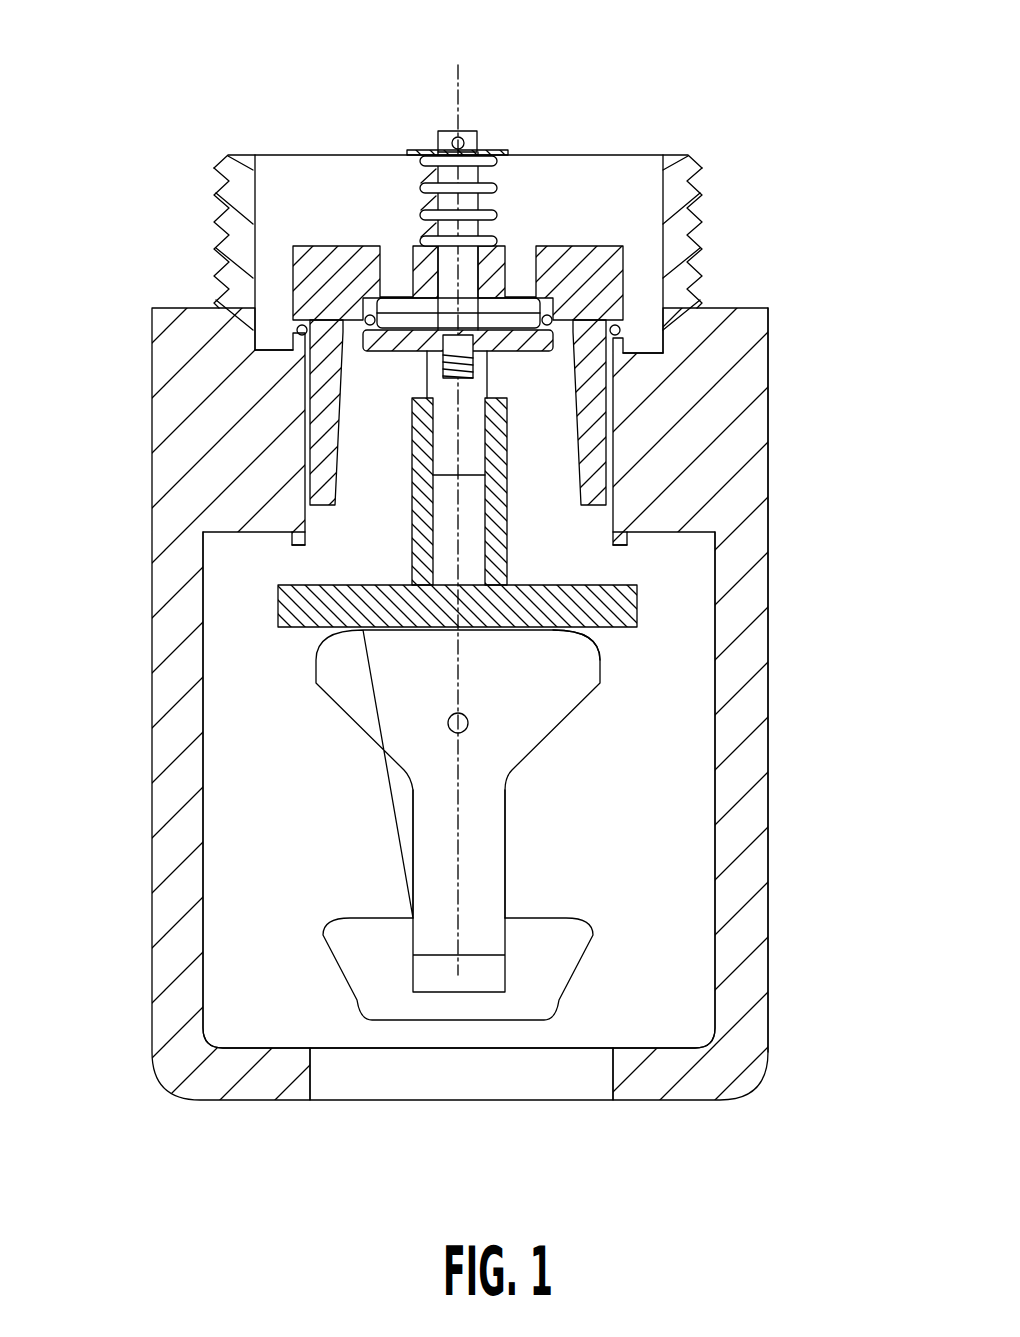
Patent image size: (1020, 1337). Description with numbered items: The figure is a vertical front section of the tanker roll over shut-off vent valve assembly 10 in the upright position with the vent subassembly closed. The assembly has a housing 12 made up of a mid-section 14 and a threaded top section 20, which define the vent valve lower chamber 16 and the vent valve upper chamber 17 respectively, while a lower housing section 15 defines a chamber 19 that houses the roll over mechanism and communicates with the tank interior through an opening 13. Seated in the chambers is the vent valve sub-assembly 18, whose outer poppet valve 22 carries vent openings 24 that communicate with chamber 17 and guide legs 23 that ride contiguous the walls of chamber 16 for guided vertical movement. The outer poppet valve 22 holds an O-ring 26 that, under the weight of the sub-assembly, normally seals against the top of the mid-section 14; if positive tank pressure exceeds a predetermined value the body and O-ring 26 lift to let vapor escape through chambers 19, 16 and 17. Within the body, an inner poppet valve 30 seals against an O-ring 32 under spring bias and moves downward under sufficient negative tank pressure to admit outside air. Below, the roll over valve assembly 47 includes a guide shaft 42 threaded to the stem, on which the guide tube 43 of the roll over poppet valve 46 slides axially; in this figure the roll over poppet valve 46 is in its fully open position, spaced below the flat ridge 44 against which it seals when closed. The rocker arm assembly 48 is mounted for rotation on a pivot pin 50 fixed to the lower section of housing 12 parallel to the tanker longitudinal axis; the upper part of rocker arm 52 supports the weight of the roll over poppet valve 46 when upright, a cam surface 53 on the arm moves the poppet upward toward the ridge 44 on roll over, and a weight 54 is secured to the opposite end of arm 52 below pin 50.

The tanker roll over shut-off vent valve assembly 10 is at (250, 65).
The housing 12 is at (772, 700).
The opening 13 is at (570, 1080).
The mid-section 14 is at (712, 424).
The lower housing section 15 is at (740, 870).
The vent valve lower passageway or chamber 16 is at (527, 448).
The vent valve upper passageway or chamber 17 is at (297, 205).
The vent valve sub-assembly 18 is at (586, 240).
The chamber 19 is at (263, 873).
The threaded top section 20 is at (700, 222).
The outer poppet valve 22 is at (585, 285).
The guide legs 23 is at (603, 468).
The vent openings 24 is at (515, 258).
The O-ring 26 is at (620, 330).
The inner poppet valve 30 is at (325, 420).
The O-ring 32 is at (366, 320).
The guide shaft 42 is at (434, 437).
The guide tube 43 is at (470, 520).
The flat ridge 44 is at (296, 545).
The roll over poppet valve 46 is at (620, 602).
The roll over valve assembly 47 is at (284, 663).
The rocker arm assembly 48 is at (578, 717).
The pivot pin 50 is at (448, 724).
The rocker arm 52 is at (505, 840).
The cam surface 53 is at (590, 647).
The weight 54 is at (570, 957).